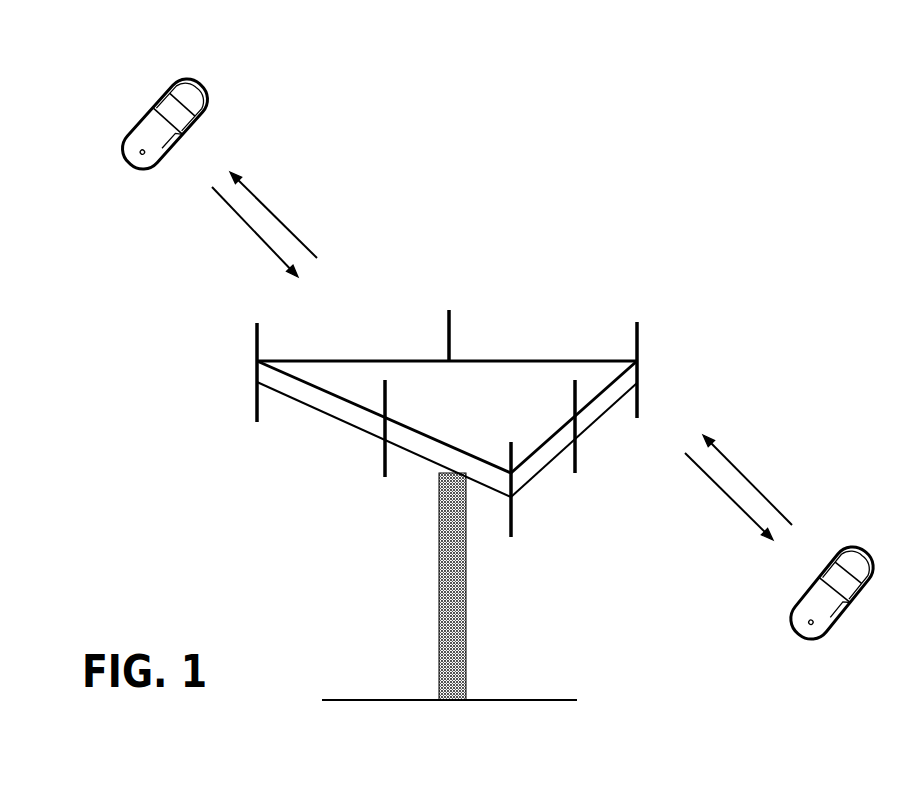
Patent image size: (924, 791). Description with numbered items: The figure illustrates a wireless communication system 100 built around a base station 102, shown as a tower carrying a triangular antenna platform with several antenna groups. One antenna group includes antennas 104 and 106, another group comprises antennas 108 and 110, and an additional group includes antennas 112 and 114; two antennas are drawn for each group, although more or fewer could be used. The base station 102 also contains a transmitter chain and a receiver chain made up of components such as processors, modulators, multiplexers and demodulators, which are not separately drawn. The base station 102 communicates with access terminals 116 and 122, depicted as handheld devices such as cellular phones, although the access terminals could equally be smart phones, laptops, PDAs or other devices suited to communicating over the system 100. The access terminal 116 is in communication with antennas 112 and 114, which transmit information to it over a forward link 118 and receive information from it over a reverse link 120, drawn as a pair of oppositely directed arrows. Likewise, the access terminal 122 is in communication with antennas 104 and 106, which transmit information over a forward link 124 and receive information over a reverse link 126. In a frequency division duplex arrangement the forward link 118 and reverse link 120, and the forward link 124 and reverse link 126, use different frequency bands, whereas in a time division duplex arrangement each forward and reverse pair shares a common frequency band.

The wireless communication system 100 is at (603, 129).
The base station 102 is at (463, 700).
The antenna 104 is at (639, 323).
The antenna 106 is at (576, 453).
The antenna 108 is at (512, 515).
The antenna 110 is at (384, 477).
The antenna 112 is at (258, 323).
The antenna 114 is at (450, 323).
The access terminal 116 is at (177, 82).
The forward link 118 is at (275, 215).
The reverse link 120 is at (265, 245).
The access terminal 122 is at (840, 548).
The forward link 124 is at (735, 507).
The reverse link 126 is at (743, 472).